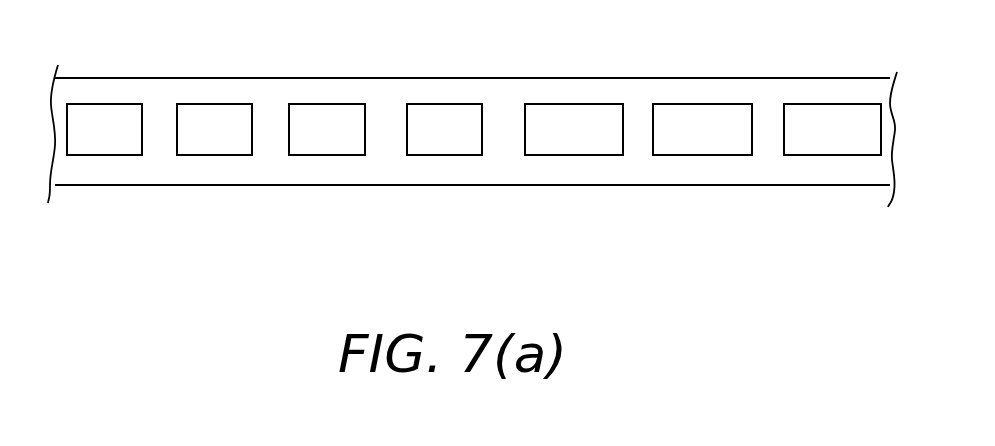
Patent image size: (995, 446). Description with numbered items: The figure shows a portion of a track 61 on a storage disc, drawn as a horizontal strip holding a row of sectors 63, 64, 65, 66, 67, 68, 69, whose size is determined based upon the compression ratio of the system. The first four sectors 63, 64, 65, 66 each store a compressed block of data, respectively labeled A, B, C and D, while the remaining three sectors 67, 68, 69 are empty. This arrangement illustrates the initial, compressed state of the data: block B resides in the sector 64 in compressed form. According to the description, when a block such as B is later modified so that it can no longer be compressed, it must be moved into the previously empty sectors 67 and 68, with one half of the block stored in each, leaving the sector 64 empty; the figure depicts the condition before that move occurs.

The track 61 is at (487, 78).
The sector 63 is at (93, 155).
The sector 64 is at (217, 155).
The sector 65 is at (330, 155).
The sector 66 is at (452, 155).
The sector 67 is at (587, 155).
The sector 68 is at (717, 155).
The sector 69 is at (808, 105).